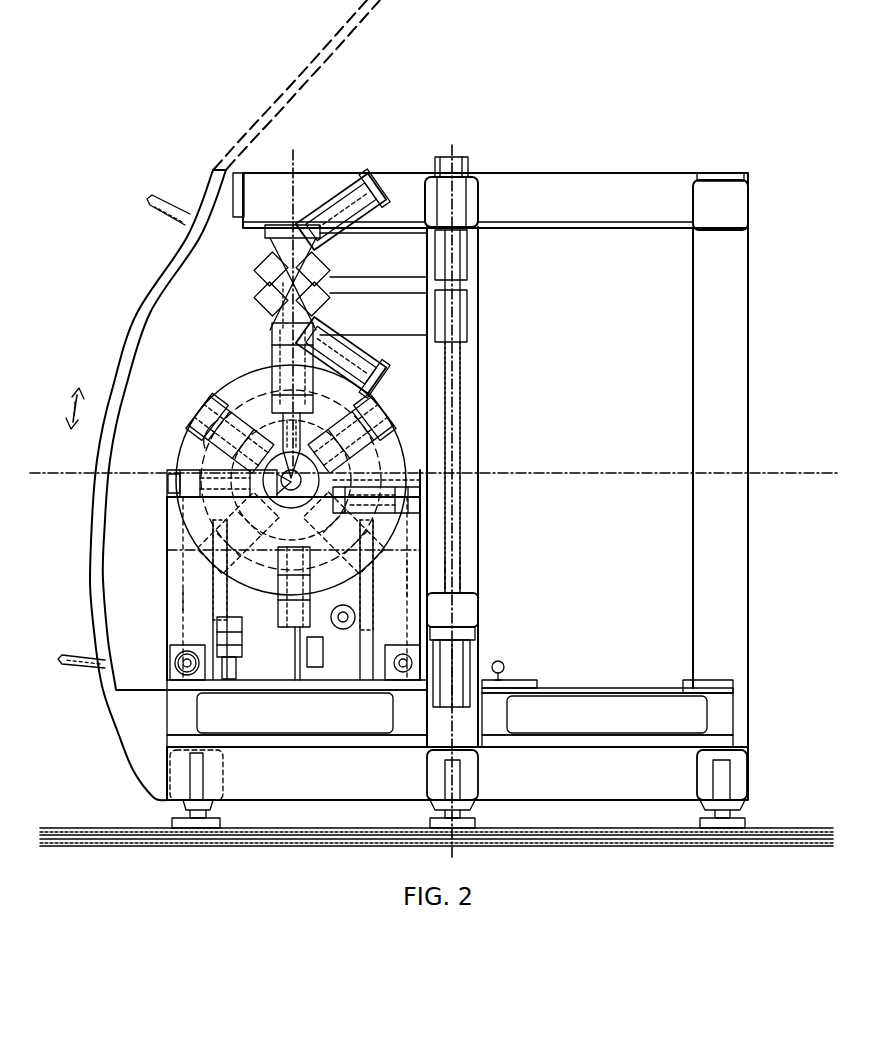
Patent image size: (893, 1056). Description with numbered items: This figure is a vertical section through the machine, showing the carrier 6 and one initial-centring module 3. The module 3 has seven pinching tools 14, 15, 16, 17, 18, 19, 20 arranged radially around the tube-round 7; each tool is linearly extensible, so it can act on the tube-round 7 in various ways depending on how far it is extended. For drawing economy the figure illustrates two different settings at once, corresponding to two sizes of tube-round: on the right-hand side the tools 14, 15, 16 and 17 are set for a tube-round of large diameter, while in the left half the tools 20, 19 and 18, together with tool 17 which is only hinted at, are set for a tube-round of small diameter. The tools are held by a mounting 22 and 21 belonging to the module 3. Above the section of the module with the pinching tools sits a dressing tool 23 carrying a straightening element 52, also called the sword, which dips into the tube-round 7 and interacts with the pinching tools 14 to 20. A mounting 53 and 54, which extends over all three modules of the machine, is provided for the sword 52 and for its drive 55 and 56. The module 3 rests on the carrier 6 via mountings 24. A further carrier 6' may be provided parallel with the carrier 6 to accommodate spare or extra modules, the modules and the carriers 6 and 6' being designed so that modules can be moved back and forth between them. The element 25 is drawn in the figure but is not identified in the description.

The initial-centring module 3 is at (157, 566).
The carrier 6 is at (297, 713).
The further carrier 6' is at (607, 704).
The tube-round 7 is at (291, 480).
The pinching tool 14 is at (358, 432).
The pinching tool 15 is at (420, 494).
The pinching tool 16 is at (410, 585).
The pinching tool 17 is at (305, 617).
The pinching tool 18 is at (206, 570).
The pinching tool 19 is at (165, 487).
The pinching tool 20 is at (196, 413).
The mounting 21 is at (205, 448).
The mounting 22 is at (172, 606).
The dressing tool 23 is at (272, 366).
The mounting 24 is at (168, 668).
The clamp block 25 is at (245, 641).
The straightening element 52 is at (297, 442).
The mounting 53 is at (470, 362).
The mounting 54 is at (395, 310).
The drive 55 is at (336, 197).
The drive 56 is at (378, 362).